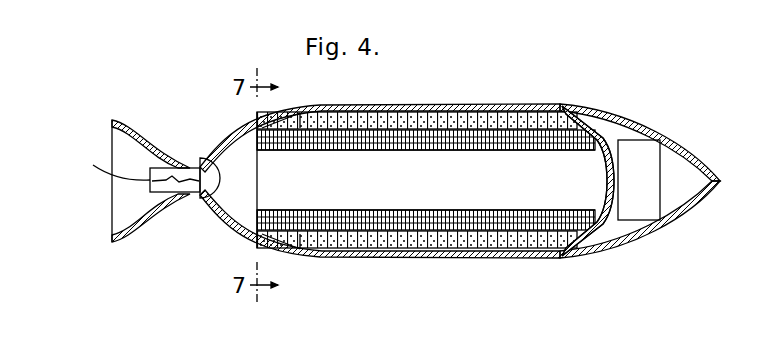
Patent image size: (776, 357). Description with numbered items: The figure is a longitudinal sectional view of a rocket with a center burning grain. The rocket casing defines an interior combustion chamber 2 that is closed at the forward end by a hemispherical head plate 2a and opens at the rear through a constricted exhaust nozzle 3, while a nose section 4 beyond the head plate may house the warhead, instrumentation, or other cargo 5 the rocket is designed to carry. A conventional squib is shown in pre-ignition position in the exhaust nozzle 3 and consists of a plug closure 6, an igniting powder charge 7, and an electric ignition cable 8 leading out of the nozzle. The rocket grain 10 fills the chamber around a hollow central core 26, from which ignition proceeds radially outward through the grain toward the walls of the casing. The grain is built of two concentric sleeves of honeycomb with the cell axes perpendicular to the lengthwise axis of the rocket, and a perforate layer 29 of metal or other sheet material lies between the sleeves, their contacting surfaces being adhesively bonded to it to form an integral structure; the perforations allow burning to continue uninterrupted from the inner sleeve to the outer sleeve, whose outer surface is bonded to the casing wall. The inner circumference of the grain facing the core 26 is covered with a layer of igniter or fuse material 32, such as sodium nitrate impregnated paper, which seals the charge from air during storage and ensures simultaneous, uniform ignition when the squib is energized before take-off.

The combustion chamber 2 is at (389, 105).
The nose section 4 is at (683, 215).
The perforate layer 29 is at (511, 120).
The rocket grain 10 is at (355, 240).
The igniter or fuse material 32 is at (426, 210).
The hollow central core 26 is at (508, 193).
The hemispherical head plate 2a is at (598, 233).
The cargo 5 is at (647, 213).
The exhaust nozzle 3 is at (171, 193).
The plug closure 6 is at (176, 167).
The igniting powder charge 7 is at (220, 179).
The electric ignition cable 8 is at (121, 178).